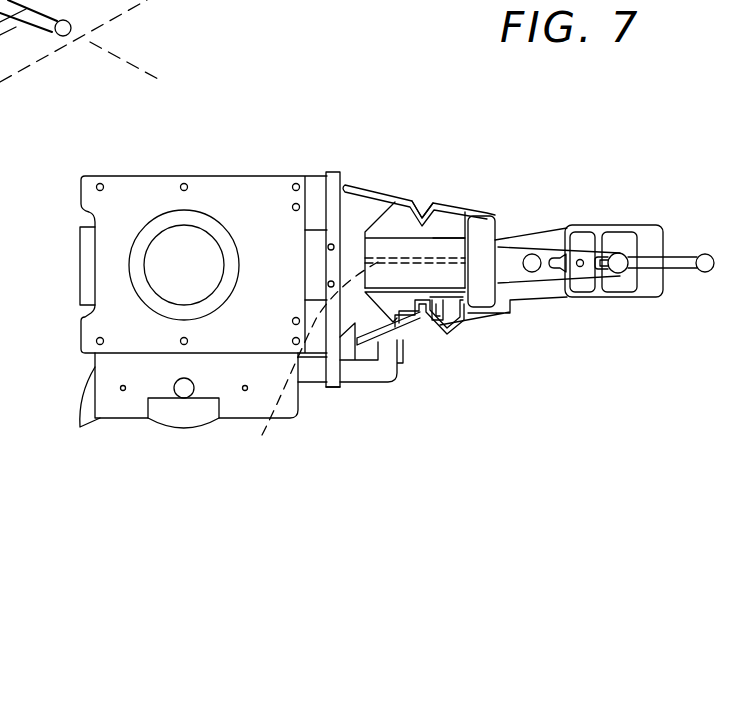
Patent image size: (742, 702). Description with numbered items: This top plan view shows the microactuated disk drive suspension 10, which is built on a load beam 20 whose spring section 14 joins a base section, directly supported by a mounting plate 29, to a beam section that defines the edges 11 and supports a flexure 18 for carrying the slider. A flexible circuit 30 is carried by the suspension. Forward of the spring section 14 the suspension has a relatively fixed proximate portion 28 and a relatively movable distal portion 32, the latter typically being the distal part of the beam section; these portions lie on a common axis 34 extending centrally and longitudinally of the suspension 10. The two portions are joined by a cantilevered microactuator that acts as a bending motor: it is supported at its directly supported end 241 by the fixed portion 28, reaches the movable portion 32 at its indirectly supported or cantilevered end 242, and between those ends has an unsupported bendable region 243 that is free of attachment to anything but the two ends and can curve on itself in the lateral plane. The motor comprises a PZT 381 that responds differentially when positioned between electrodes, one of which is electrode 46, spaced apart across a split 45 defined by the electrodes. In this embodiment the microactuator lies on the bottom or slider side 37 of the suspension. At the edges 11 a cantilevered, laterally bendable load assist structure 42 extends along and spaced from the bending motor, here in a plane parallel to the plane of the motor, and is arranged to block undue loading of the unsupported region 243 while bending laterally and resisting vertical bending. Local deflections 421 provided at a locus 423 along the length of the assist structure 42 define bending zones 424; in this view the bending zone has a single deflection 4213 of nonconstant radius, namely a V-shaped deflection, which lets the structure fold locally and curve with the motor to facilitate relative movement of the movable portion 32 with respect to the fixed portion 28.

The microactuated disk drive suspension 10 is at (226, 139).
The edges 11 is at (340, 198).
The spring section 14 is at (312, 172).
The flexure 18 is at (620, 297).
The load beam 20 is at (273, 168).
The relatively fixed proximate suspension portion 28 is at (347, 182).
The mounting plate 29 is at (88, 193).
The flexible circuit 30 is at (377, 378).
The relatively movable distal suspension portion 32 is at (528, 238).
The common axis 34 is at (135, 63).
The bottom (slider) side of the suspension 37 is at (522, 243).
The load assist structure 42 is at (437, 342).
The split 45 is at (309, 361).
The electrode 46 is at (485, 225).
The directly supported end 241 is at (378, 247).
The indirectly supported (cantilevered) end 242 is at (455, 273).
The unsupported bendable region 243 is at (452, 243).
The PZT 381 is at (447, 288).
The local deflections 421 is at (423, 335).
The locus 423 is at (437, 247).
The bending zones 424 is at (411, 340).
The single deflection of nonconstant radius 4213 is at (340, 372).